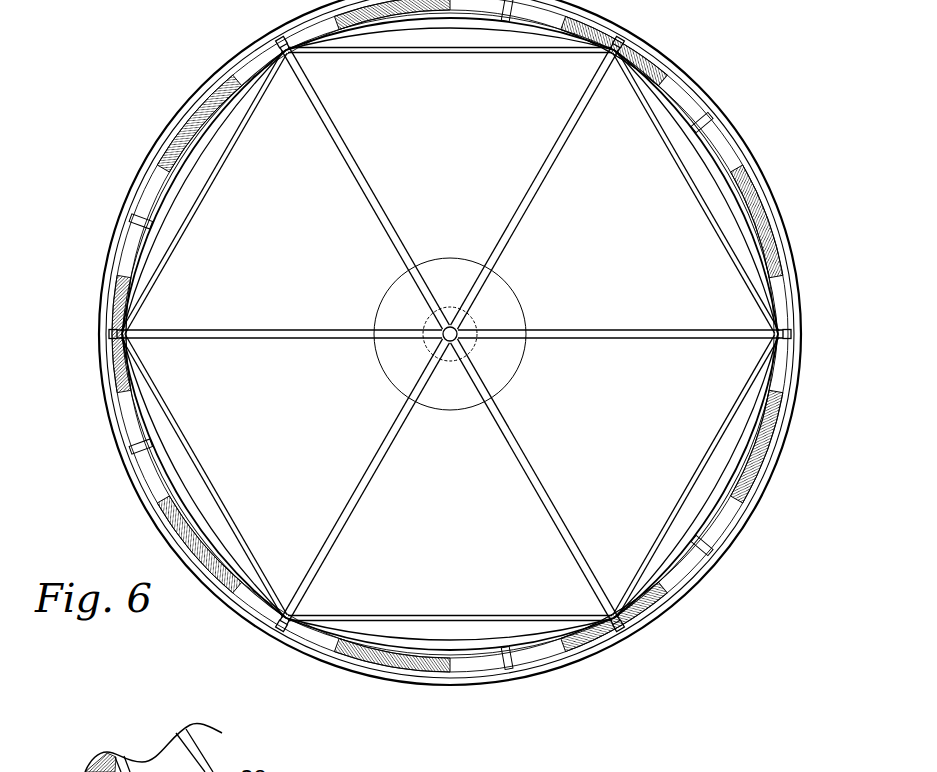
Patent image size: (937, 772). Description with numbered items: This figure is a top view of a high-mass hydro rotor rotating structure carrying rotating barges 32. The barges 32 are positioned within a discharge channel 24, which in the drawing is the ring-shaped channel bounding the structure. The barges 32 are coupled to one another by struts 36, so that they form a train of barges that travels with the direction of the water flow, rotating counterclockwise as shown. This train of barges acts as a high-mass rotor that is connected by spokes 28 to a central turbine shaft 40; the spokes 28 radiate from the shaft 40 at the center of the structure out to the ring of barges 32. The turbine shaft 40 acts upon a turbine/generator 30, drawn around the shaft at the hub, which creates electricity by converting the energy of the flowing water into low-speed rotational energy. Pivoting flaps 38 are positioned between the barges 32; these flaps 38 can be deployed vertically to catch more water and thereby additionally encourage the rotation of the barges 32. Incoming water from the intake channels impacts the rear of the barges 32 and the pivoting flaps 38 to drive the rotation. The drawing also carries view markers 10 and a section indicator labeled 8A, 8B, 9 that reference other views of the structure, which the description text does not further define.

The section view reference 8A is at (757, 495).
The section view reference 8B is at (757, 495).
The section view reference 9 is at (672, 436).
The section line 10 is at (170, 353).
The discharge channel 24 is at (699, 82).
The spokes 28 is at (513, 447).
The turbine/generator 30 is at (460, 262).
The barges 32 is at (580, 658).
The struts 36 is at (175, 244).
The pivoting flaps 38 is at (136, 214).
The central turbine shaft 40 is at (468, 326).